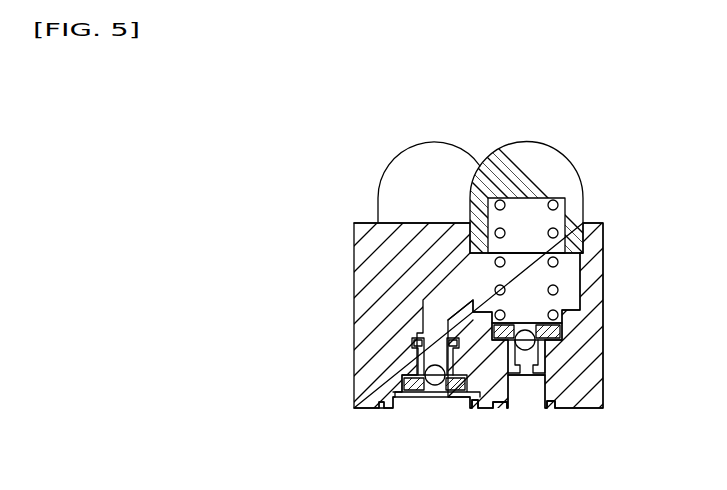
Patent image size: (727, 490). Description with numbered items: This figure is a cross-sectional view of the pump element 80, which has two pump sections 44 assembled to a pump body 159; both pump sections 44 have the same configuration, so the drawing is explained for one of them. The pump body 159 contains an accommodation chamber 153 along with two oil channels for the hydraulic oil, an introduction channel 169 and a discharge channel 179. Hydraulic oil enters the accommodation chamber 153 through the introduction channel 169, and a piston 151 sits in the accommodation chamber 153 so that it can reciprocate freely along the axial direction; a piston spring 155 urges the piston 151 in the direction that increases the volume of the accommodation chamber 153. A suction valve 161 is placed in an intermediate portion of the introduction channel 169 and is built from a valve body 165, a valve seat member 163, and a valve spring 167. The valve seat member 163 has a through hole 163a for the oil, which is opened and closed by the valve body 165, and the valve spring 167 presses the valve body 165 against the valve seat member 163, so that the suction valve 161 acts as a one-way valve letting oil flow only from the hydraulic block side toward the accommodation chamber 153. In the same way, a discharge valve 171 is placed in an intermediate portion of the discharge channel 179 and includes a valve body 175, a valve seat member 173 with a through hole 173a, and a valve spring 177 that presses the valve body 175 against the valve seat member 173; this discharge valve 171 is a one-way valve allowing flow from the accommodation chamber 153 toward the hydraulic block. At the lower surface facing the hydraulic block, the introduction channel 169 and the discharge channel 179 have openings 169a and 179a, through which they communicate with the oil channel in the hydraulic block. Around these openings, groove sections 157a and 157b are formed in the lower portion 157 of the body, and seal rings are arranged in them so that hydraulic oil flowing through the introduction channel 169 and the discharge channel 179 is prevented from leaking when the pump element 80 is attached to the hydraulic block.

The pump section 44 is at (450, 130).
The pump element 80 is at (619, 213).
The piston 151 is at (575, 166).
The accommodation chamber 153 is at (566, 262).
The piston spring 155 is at (585, 227).
The center block 157 is at (479, 355).
The groove section 157a is at (486, 407).
The groove section 157b is at (495, 407).
The pump body 159 is at (368, 245).
The suction valve 161 is at (412, 335).
The valve seat member 163 is at (422, 378).
The through hole 163a is at (437, 395).
The valve body 165 is at (414, 367).
The valve spring 167 is at (413, 344).
The introduction channel 169 is at (420, 297).
The opening 169a is at (418, 408).
The discharge valve 171 is at (560, 315).
The valve seat member 173 is at (565, 333).
The through hole 173a is at (540, 302).
The valve body 175 is at (548, 338).
The valve spring 177 is at (548, 370).
The discharge channel 179 is at (548, 393).
The opening 179a is at (533, 407).